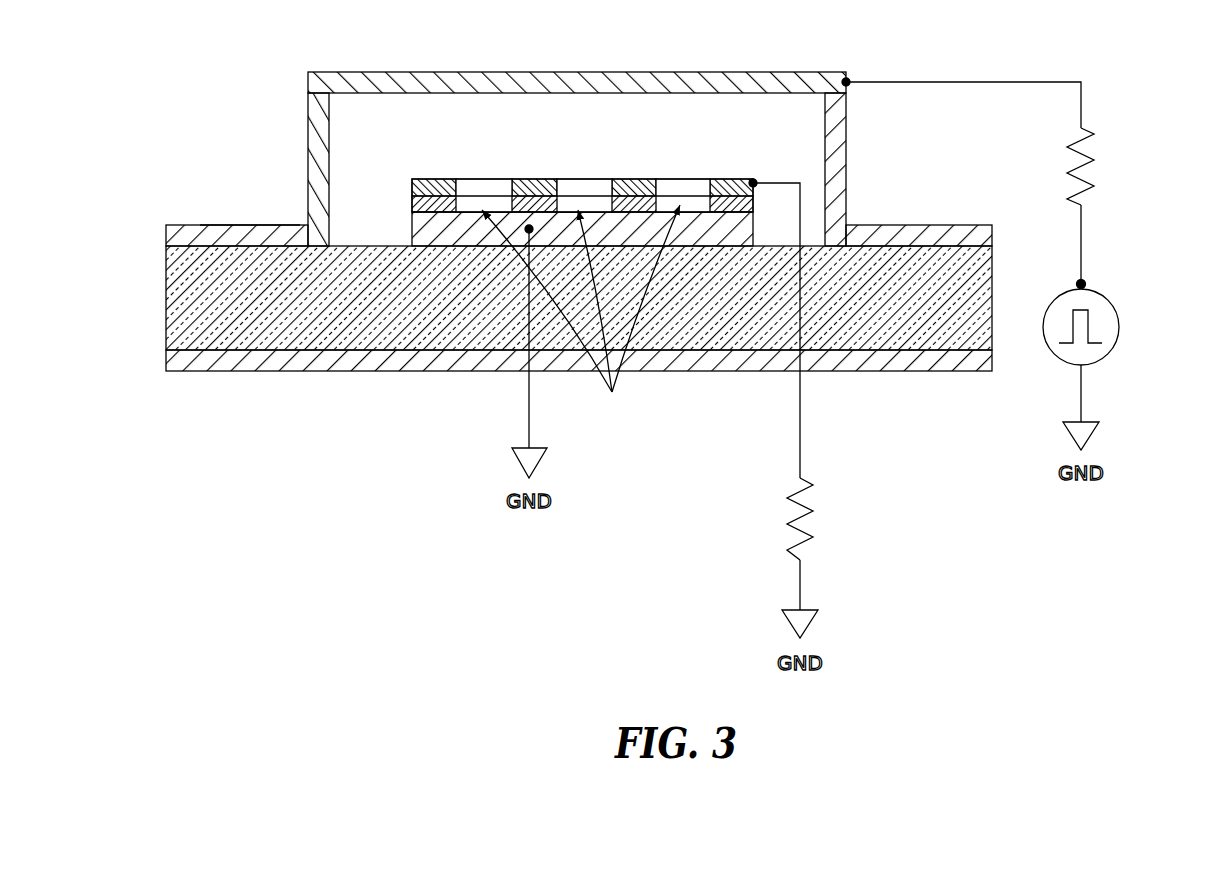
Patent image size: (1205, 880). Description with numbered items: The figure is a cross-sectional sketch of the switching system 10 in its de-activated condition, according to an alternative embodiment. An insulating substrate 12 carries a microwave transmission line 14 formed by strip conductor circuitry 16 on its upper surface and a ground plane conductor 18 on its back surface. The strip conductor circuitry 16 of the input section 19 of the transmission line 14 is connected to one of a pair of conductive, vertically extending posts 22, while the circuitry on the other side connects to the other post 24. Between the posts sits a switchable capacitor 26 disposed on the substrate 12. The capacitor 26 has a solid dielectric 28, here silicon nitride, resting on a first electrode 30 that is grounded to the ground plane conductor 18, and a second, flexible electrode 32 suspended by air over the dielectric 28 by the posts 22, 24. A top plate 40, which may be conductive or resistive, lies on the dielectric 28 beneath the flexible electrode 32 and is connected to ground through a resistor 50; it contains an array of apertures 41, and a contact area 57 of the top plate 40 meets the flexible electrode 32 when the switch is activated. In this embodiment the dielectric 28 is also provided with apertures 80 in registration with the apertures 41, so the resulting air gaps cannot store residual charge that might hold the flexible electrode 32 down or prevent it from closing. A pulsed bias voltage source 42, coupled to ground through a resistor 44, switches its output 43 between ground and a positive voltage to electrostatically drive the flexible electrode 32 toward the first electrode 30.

The switching system 10 is at (553, 219).
The insulating substrate 12 is at (166, 302).
The microwave transmission line 14 is at (214, 170).
The strip conductor circuitry 16 is at (166, 235).
The ground plane conductor 18 is at (263, 372).
The input section 19 is at (268, 217).
The conductive vertically extending post 22 is at (310, 114).
The conductive vertically extending post 24 is at (847, 122).
The switchable capacitor 26 is at (436, 70).
The dielectric 28 is at (412, 204).
The first electrode 30 is at (412, 228).
The flexible electrode 32 is at (795, 93).
The top plate 40 is at (557, 162).
The apertures 41 is at (481, 177).
The bias voltage source 42 is at (1120, 323).
The output 43 is at (1087, 283).
The resistor 44 is at (1095, 168).
The resistor 50 is at (814, 519).
The contact area 57 is at (414, 172).
The apertures 80 is at (581, 315).